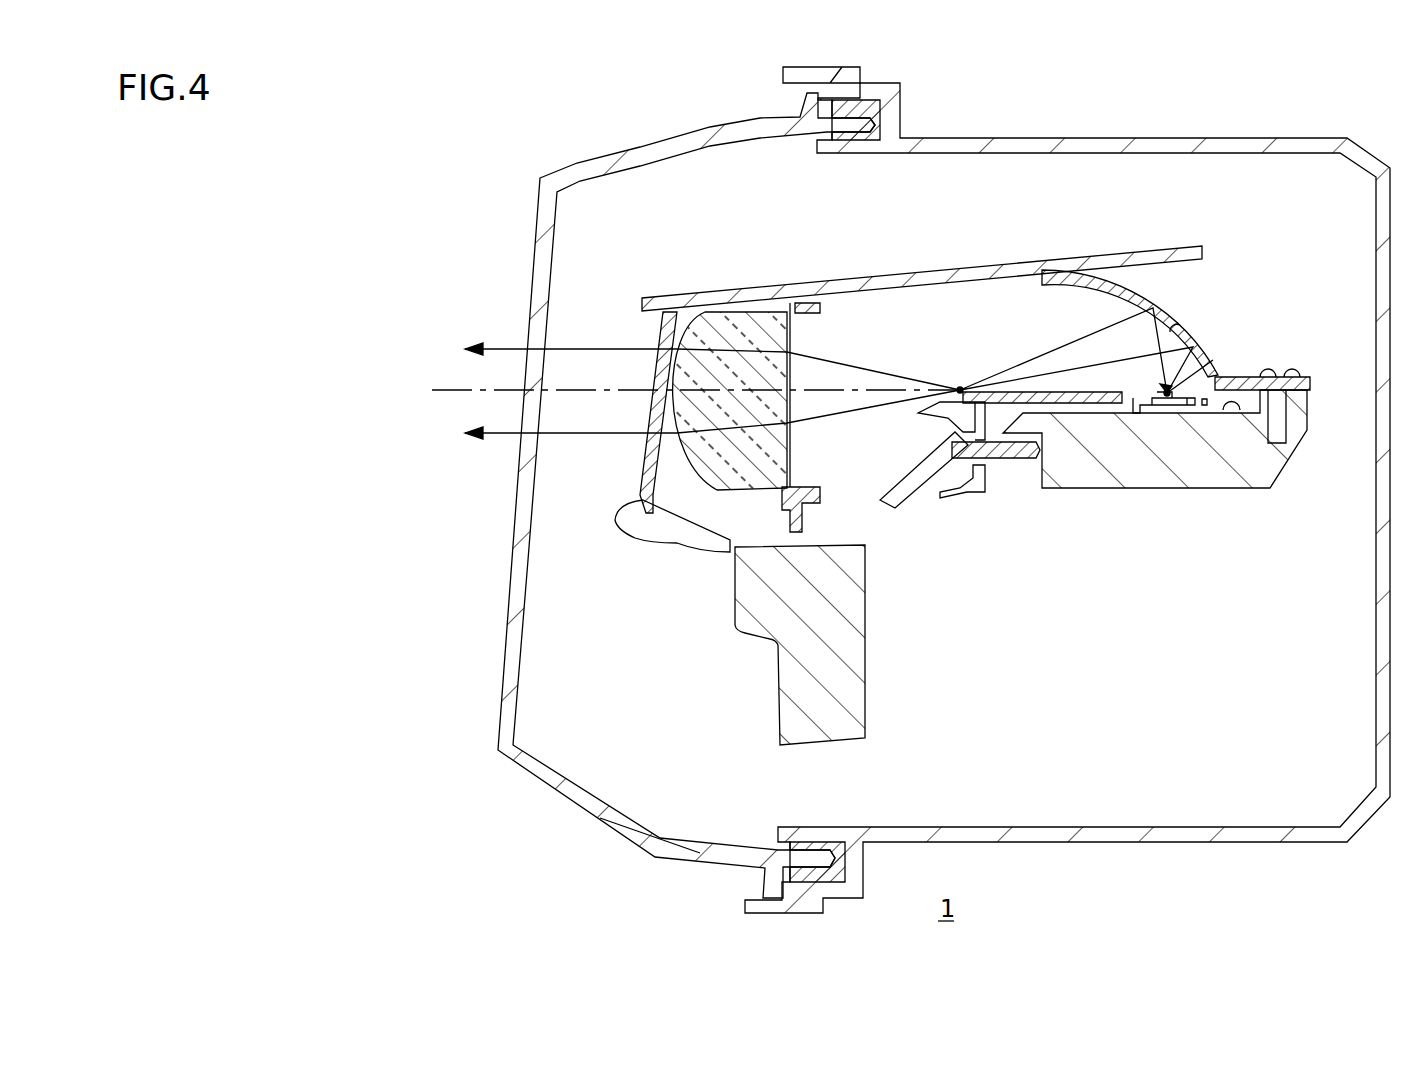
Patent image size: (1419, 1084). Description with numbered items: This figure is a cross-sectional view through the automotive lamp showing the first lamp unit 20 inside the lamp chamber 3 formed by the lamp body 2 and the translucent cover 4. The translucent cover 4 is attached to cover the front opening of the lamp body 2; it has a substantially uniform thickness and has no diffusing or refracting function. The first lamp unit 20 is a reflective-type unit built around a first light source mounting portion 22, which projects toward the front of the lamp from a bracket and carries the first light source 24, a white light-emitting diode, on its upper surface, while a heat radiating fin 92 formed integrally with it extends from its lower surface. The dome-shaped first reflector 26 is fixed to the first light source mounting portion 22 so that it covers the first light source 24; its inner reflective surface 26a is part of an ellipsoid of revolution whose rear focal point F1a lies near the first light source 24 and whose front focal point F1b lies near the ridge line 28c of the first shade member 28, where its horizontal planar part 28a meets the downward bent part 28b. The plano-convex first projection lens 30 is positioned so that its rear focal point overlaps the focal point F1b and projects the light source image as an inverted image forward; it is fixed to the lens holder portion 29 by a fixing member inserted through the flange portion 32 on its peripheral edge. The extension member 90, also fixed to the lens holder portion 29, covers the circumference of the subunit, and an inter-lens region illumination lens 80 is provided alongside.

The lamp body 2 is at (1155, 843).
The lamp chamber 3 is at (590, 770).
The translucent cover 4 is at (630, 840).
The first lamp unit 20 is at (1214, 578).
The first light source mounting portion 22 is at (1232, 412).
The first light source 24 is at (1156, 410).
The first reflector 26 is at (1207, 338).
The reflective surface 26a is at (1180, 330).
The first shade member 28 is at (1007, 462).
The planar part 28a is at (1056, 390).
The bent part 28b is at (923, 480).
The ridge line 28c is at (975, 495).
The lens holder portion 29 is at (800, 510).
The first projection lens 30 is at (700, 480).
The flange portion 32 is at (763, 510).
The inter-lens region illumination lens 80 is at (640, 463).
The extension member 90 is at (738, 298).
The heat radiating fin 92 is at (1110, 478).
The focal point F1a is at (1170, 390).
The focal point F1b is at (960, 388).